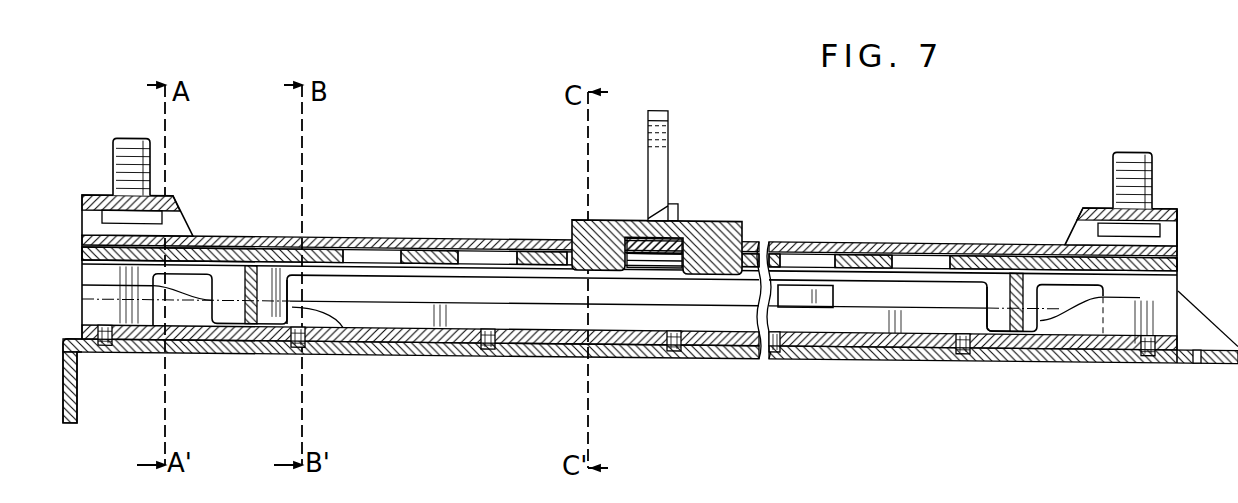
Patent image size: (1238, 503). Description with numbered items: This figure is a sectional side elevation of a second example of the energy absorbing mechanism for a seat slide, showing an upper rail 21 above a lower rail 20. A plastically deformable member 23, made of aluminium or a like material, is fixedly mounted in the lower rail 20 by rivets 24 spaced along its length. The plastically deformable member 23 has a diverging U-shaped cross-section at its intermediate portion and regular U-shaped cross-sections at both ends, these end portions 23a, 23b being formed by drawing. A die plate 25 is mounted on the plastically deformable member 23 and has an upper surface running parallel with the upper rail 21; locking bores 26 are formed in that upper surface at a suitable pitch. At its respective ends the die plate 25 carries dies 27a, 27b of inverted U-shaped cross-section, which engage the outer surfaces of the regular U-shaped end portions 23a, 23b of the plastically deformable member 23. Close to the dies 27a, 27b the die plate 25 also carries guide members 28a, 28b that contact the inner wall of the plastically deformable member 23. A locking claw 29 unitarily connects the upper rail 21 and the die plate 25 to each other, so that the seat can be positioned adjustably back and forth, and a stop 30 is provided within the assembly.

The lower rail 20 is at (1030, 362).
The upper rail 21 is at (922, 245).
The plastically deformable member 23 is at (518, 318).
The end portion of plastically deformable member 23a is at (174, 308).
The end portion of plastically deformable member 23b is at (1088, 320).
The rivets 24 is at (670, 357).
The die plate 25 is at (328, 250).
The locking bores 26 is at (473, 258).
The die 27a is at (78, 263).
The die 27b is at (1168, 292).
The guide member 28a is at (311, 310).
The guide member 28b is at (1000, 322).
The locking claw 29 is at (720, 222).
The stop 30 is at (821, 290).